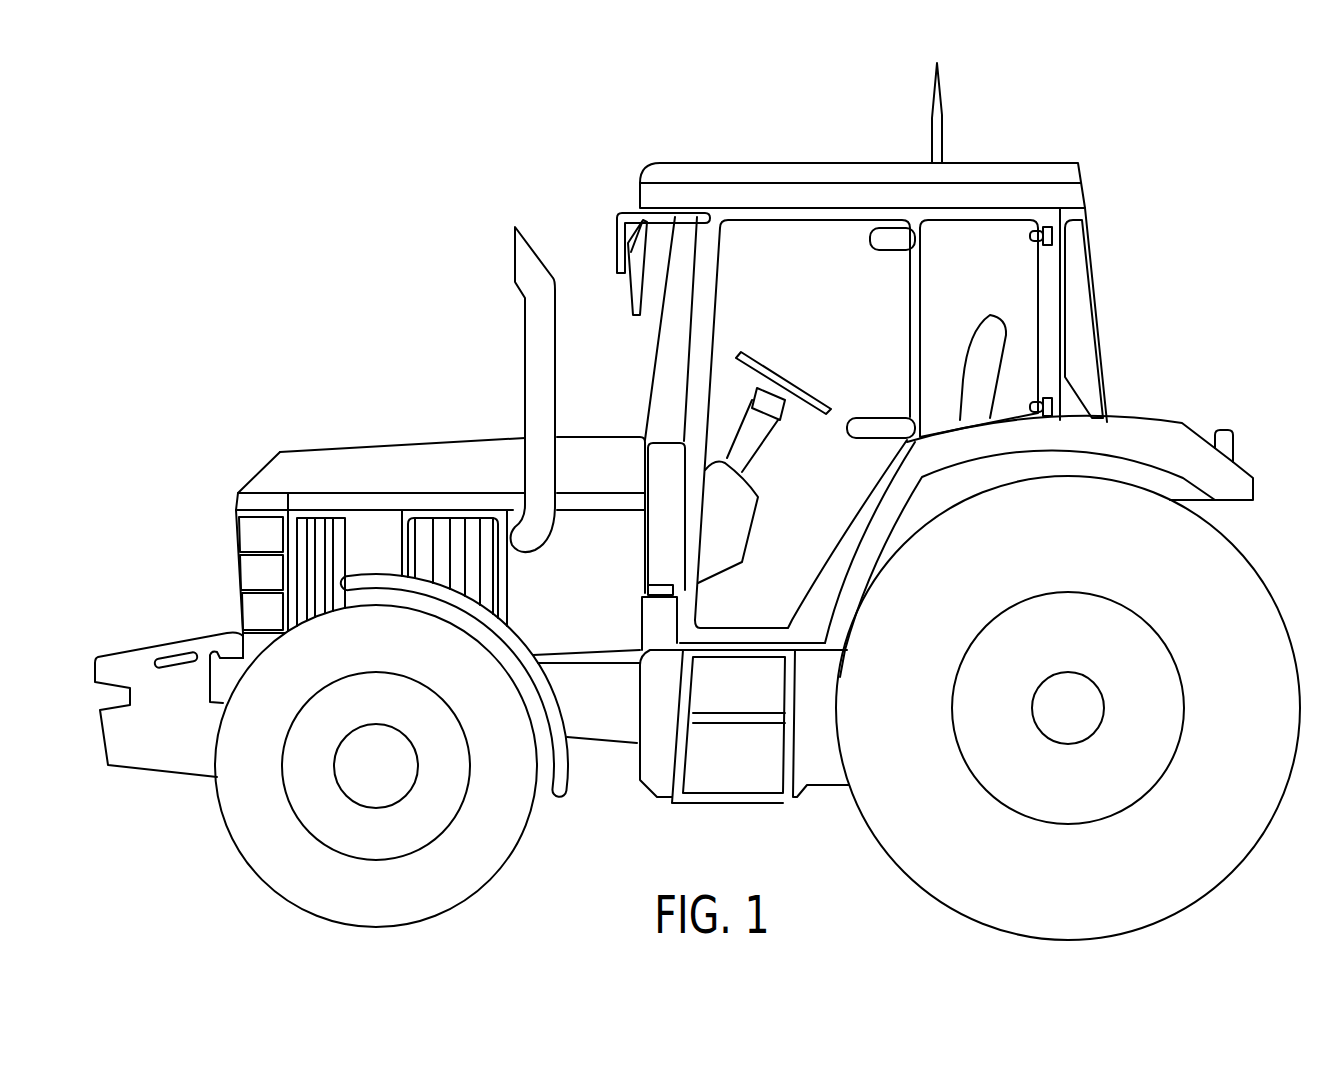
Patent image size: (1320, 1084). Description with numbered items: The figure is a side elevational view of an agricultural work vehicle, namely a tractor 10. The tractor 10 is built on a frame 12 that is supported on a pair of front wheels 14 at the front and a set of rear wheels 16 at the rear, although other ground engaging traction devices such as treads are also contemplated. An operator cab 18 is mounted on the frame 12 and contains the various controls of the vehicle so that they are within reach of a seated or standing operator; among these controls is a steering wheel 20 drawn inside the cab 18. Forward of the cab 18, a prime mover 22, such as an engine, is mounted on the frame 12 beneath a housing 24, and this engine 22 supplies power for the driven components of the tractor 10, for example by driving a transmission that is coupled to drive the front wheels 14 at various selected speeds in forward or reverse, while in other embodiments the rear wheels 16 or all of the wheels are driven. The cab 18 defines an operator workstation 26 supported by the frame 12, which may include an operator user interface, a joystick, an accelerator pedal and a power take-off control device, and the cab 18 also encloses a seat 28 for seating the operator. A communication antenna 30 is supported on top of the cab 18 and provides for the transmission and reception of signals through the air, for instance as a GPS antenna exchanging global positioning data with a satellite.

The tractor 10 is at (1259, 226).
The frame 12 is at (591, 728).
The front wheels 14 is at (498, 856).
The rear wheels 16 is at (1239, 826).
The operator cab 18 is at (1043, 188).
The steering wheel 20 is at (748, 352).
The prime mover 22 is at (428, 520).
The housing 24 is at (288, 400).
The operator workstation 26 is at (740, 530).
The seat 28 is at (992, 315).
The communication antenna 30 is at (942, 146).